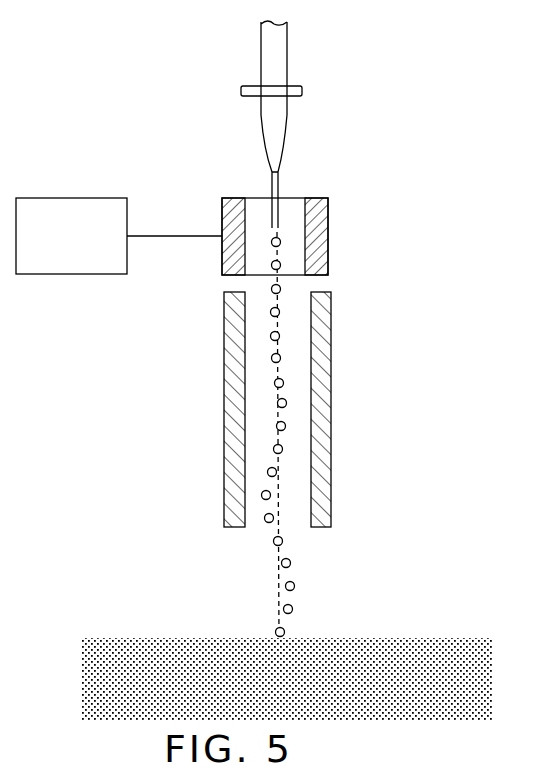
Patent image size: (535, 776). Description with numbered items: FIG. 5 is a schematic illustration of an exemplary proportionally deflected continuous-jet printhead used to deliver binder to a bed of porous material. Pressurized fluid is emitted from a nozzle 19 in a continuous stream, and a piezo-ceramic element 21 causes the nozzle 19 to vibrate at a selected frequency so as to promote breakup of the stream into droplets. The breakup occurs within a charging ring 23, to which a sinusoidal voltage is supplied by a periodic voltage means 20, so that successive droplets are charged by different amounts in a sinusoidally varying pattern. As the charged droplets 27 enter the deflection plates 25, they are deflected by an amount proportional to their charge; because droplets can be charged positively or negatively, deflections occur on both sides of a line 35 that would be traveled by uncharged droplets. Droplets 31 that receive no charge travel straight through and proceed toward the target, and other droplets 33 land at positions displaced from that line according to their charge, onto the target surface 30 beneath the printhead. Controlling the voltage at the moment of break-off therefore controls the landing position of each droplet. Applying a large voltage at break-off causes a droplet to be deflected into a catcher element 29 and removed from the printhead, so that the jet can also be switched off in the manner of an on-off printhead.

The nozzle 19 is at (292, 58).
The periodic voltage means 20 is at (80, 198).
The piezo-ceramic element 21 is at (239, 91).
The charging ring 23 is at (332, 222).
The deflection plates 25 is at (333, 389).
The charged droplets 27 is at (259, 491).
The catcher element 29 is at (222, 558).
The substrate 30 is at (424, 633).
The uncharged droplets 31 is at (292, 543).
The droplet 33 is at (303, 586).
The line traveled by uncharged droplets 35 is at (273, 597).